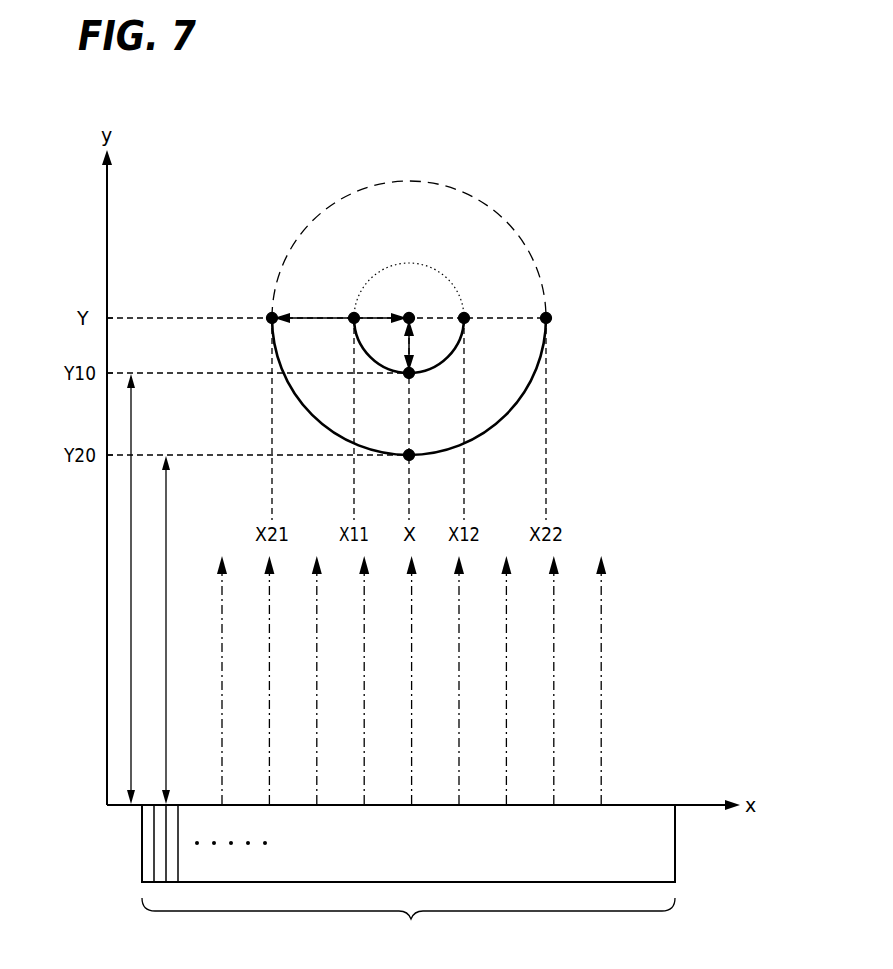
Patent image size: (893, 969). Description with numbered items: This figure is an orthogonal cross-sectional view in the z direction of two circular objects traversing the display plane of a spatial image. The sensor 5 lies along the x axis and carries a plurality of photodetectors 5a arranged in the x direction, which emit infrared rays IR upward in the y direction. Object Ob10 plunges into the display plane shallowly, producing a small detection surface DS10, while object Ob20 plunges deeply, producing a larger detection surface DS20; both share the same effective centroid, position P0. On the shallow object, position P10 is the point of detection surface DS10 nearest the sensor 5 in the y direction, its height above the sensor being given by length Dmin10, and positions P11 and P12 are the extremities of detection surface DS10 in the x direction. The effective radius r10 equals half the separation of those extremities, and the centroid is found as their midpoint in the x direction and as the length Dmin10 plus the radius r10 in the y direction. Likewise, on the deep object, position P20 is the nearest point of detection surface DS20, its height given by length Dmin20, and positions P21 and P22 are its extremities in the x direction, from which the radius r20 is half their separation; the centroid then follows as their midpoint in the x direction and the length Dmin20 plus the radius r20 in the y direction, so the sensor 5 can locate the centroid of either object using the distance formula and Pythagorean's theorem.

The sensor 5 is at (408, 877).
The photodetectors 5a is at (150, 843).
The infrared rays IR is at (603, 645).
The object Ob10 is at (412, 263).
The object Ob20 is at (430, 181).
The detection surface DS10 is at (455, 354).
The detection surface DS20 is at (525, 395).
The position P0 is at (410, 314).
The position P10 is at (411, 378).
The position P11 is at (352, 314).
The position P12 is at (466, 314).
The position P20 is at (411, 460).
The position P21 is at (270, 314).
The position P22 is at (548, 314).
The radius r10 is at (424, 345).
The radius r20 is at (340, 331).
The length Dmin10 is at (132, 413).
The length Dmin20 is at (167, 503).